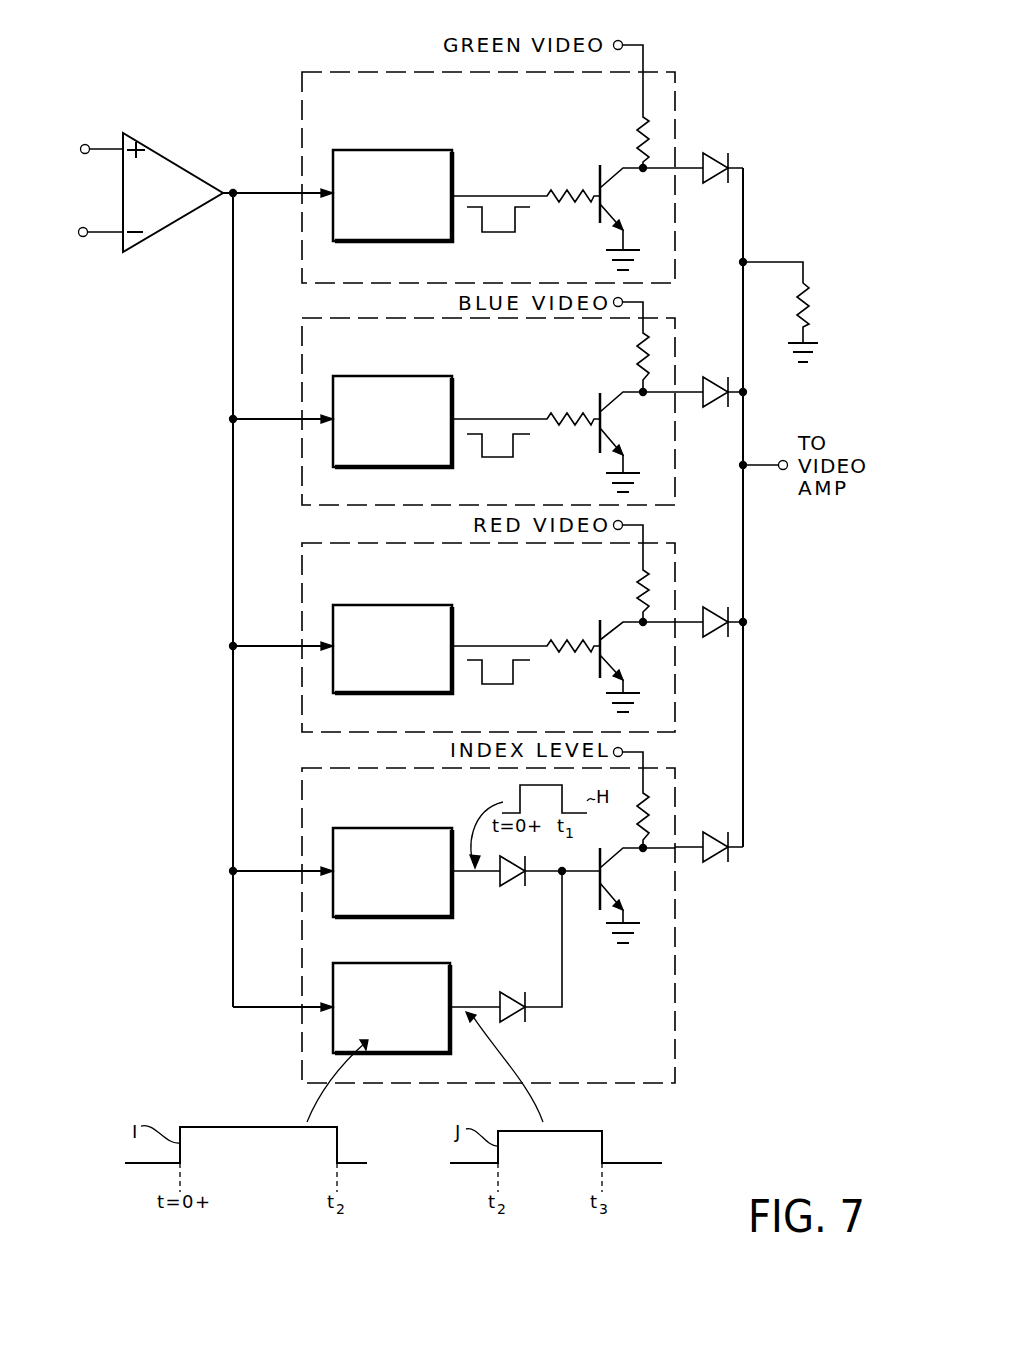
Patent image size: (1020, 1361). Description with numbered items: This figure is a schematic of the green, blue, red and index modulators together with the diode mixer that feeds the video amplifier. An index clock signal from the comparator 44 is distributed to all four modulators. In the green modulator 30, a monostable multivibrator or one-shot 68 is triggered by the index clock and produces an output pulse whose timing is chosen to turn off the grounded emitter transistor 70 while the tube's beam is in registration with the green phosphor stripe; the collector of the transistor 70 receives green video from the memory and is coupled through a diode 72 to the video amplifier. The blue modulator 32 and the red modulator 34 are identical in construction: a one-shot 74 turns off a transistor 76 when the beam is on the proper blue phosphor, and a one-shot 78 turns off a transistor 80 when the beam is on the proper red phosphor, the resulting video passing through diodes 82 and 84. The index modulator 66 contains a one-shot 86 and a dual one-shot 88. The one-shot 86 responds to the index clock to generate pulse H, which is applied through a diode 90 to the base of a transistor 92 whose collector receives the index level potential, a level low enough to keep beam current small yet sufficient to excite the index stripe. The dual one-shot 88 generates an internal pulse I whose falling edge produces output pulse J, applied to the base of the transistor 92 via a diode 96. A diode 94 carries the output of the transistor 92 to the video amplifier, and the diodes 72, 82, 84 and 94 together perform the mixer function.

The comparator 44 is at (173, 227).
The green modulator 30 is at (302, 265).
The blue modulator 32 is at (302, 490).
The red modulator 34 is at (302, 695).
The index modulator 66 is at (302, 940).
The one-shot 68 is at (452, 163).
The transistor 70 is at (598, 213).
The diode 72 is at (703, 157).
The one-shot 74 is at (452, 389).
The transistor 76 is at (598, 440).
The diode 82 is at (703, 379).
The one-shot 78 is at (452, 627).
The transistor 80 is at (598, 662).
The diode 84 is at (703, 608).
The one-shot 86 is at (408, 828).
The dual one-shot 88 is at (408, 963).
The diode 90 is at (512, 886).
The transistor 92 is at (602, 879).
The diode 94 is at (703, 862).
The diode 96 is at (505, 993).